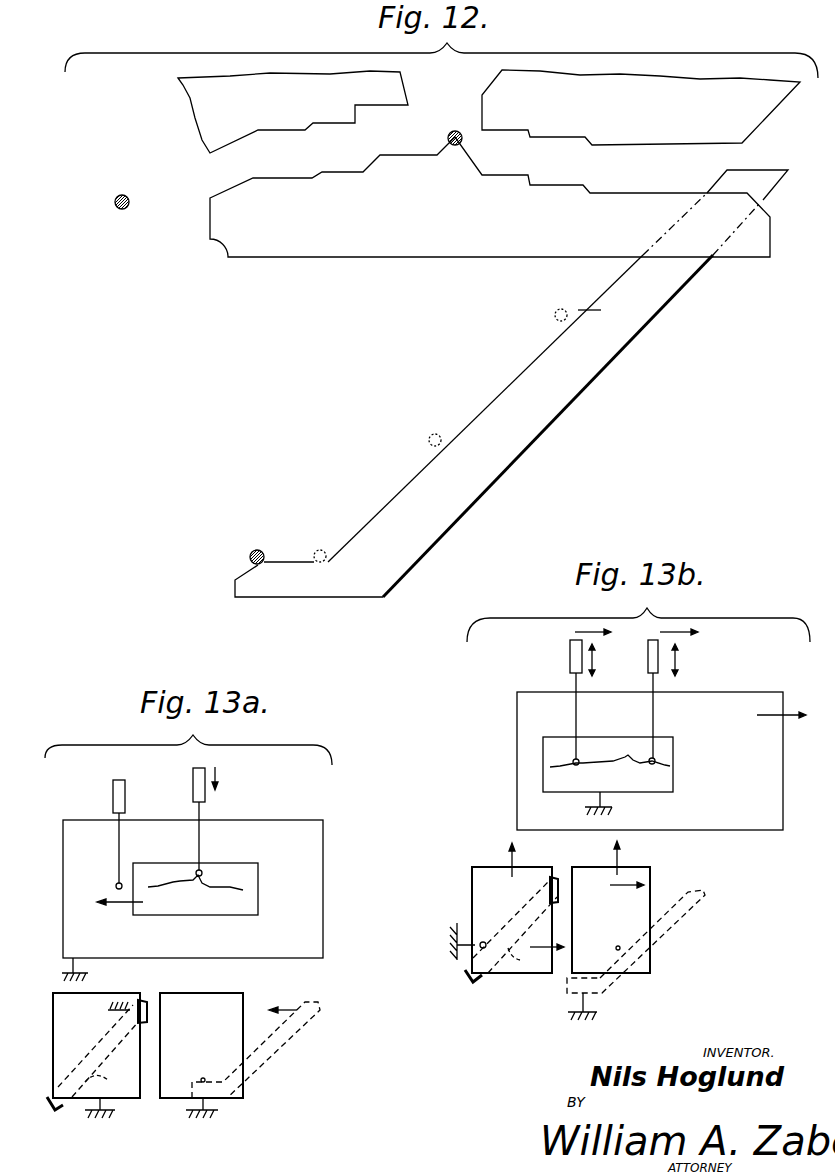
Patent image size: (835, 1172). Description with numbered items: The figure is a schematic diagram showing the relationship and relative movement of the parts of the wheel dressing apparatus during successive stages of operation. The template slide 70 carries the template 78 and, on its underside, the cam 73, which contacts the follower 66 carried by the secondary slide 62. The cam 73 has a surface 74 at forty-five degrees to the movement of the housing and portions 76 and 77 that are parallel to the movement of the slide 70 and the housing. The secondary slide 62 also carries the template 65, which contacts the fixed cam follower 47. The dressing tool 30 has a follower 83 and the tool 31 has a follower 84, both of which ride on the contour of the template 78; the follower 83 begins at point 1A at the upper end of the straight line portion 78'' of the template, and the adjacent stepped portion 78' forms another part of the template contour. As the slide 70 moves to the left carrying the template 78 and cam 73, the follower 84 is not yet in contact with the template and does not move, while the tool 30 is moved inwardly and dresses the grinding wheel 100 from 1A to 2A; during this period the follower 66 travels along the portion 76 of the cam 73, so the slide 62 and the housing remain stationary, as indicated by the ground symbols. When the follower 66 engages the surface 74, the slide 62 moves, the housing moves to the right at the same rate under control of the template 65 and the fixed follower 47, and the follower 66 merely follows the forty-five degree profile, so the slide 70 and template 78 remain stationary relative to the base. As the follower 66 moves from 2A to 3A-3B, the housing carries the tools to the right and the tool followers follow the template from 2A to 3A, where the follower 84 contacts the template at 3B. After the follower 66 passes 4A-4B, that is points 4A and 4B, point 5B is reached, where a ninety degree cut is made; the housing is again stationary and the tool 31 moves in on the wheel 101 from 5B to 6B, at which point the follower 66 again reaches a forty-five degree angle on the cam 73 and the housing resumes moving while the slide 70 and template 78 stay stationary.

In FIG. 12, the grinding wheel 100 is at (767, 105).
In FIG. 12, the wheel 101 is at (198, 100).
In FIG. 12, the template 78 is at (512, 197).
In FIG. 13A, the template 78 is at (222, 896).
In FIG. 13B, the template 78 is at (633, 774).
In FIG. 12, the stepped edge of slide plate 78' is at (335, 162).
In FIG. 12, the straight line portion of the template 78'' is at (496, 152).
In FIG. 12, the follower 83 is at (449, 135).
In FIG. 12, the follower 84 is at (124, 195).
In FIG. 12, the cam 73 is at (577, 397).
In FIG. 13A, the cam 73 is at (277, 1043).
In FIG. 13B, the cam 73 is at (707, 898).
In FIG. 12, the cam surface 74 is at (538, 347).
In FIG. 12, the cam portion 76 is at (282, 560).
In FIG. 12, the cam portion 77 is at (583, 308).
In FIG. 12, the follower 66 is at (250, 555).
In FIG. 13A, the follower 66 is at (203, 1077).
In FIG. 13B, the follower 66 is at (618, 946).
In FIG. 12, the point 1A is at (262, 566).
In FIG. 12, the point 2A is at (320, 563).
In FIG. 12, the point 3A is at (587, 132).
In FIG. 12, the point 4A is at (742, 143).
In FIG. 12, the point 3B is at (212, 150).
In FIG. 12, the point 4B is at (350, 123).
In FIG. 12, the point 5B is at (355, 123).
In FIG. 12, the point 6B is at (355, 105).
In FIG. 12, the points 3A—3B 3A-3B is at (440, 445).
In FIG. 12, the points 4A, 4B 4A-4B is at (567, 322).
In FIG. 13A, the dressing tool 30 is at (193, 773).
In FIG. 13B, the dressing tool 30 is at (648, 657).
In FIG. 13A, the tool 31 is at (113, 787).
In FIG. 13B, the tool 31 is at (570, 657).
In FIG. 13A, the template slide 70 is at (247, 873).
In FIG. 13B, the template slide 70 is at (663, 750).
In FIG. 13A, the secondary slide 62 is at (133, 997).
In FIG. 13B, the secondary slide 62 is at (483, 873).
In FIG. 13A, the fixed cam follower 47 is at (113, 1020).
In FIG. 13B, the fixed cam follower 47 is at (485, 942).
In FIG. 13A, the template 65 is at (107, 1076).
In FIG. 13B, the template 65 is at (521, 958).